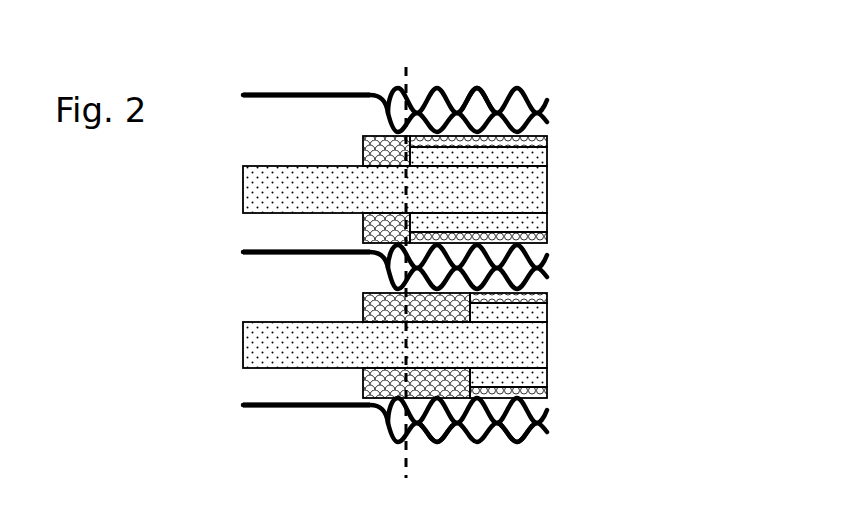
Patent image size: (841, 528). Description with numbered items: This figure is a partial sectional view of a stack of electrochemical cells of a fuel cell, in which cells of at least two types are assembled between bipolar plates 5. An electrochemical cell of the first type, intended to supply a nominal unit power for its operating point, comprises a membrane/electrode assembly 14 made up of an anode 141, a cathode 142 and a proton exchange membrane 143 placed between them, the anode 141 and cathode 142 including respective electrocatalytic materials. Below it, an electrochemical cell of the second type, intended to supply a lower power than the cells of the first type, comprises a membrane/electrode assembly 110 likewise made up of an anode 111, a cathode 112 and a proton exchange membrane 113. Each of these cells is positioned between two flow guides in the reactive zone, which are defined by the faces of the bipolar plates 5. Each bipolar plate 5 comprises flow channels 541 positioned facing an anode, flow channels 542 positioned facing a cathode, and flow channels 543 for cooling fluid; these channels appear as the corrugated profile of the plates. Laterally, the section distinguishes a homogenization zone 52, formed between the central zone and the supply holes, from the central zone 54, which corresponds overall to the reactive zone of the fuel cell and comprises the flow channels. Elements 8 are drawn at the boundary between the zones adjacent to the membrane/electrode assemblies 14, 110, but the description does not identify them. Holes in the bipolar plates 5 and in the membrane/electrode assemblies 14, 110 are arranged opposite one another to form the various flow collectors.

The bipolar plate 5 is at (467, 261).
The homogenization zone 52 is at (333, 57).
The central zone 54 is at (472, 57).
The flow channels 541 is at (459, 437).
The flow channels 542 is at (497, 97).
The flow channels 543 is at (519, 438).
The insulating member 8 is at (362, 150).
The membrane/electrode assembly 14 is at (458, 189).
The anode 141 is at (548, 158).
The cathode 142 is at (548, 229).
The proton exchange membrane 143 is at (548, 190).
The membrane/electrode assembly 110 is at (464, 346).
The anode 111 is at (548, 313).
The cathode 112 is at (548, 383).
The proton exchange membrane 113 is at (548, 347).